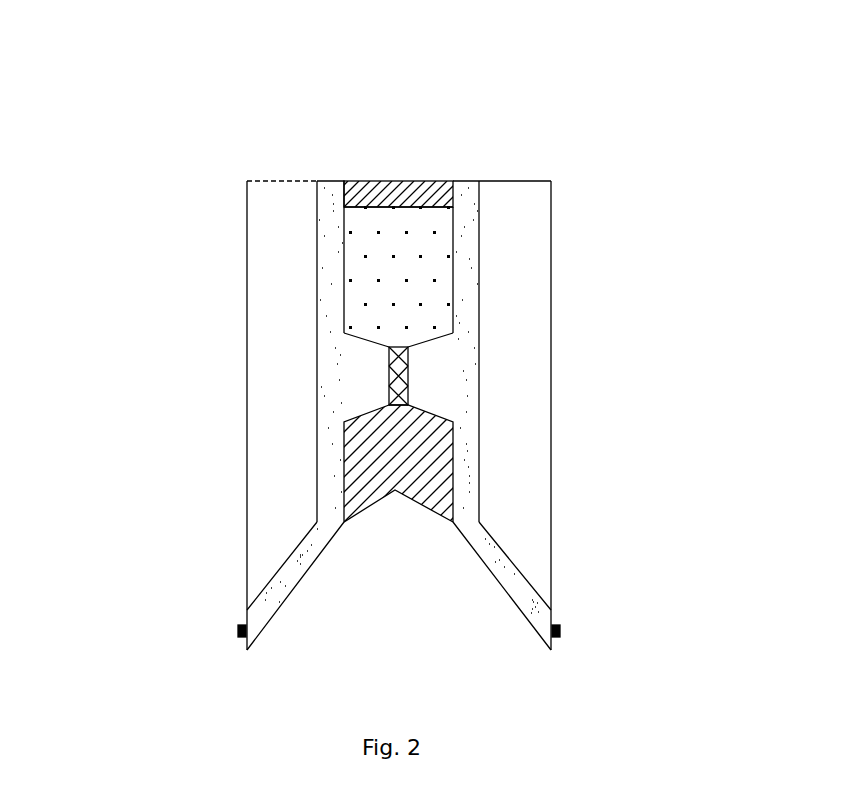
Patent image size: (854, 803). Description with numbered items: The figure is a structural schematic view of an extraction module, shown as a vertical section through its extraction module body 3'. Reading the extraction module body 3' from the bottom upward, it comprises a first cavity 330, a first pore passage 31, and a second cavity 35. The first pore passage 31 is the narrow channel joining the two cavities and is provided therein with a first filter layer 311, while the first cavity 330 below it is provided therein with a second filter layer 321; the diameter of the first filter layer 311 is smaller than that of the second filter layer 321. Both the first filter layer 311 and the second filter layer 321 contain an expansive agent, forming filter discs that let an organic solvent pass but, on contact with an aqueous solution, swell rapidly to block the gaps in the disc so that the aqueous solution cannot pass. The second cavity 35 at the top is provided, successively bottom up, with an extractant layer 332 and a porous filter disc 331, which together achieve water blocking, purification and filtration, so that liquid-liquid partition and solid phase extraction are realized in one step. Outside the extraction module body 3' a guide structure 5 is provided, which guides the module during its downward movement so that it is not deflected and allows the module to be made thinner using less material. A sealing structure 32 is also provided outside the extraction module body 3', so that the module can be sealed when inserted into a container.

The guide structure 5 is at (247, 233).
The second cavity 35 is at (453, 272).
The extraction module body 3' is at (474, 431).
The porous filter disc 331 is at (395, 181).
The extractant layer 332 is at (408, 262).
The first pore passage 31 is at (398, 369).
The first filter layer 311 is at (395, 378).
The second filter layer 321 is at (392, 433).
The first cavity 330 is at (453, 453).
The sealing structure 32 is at (240, 637).